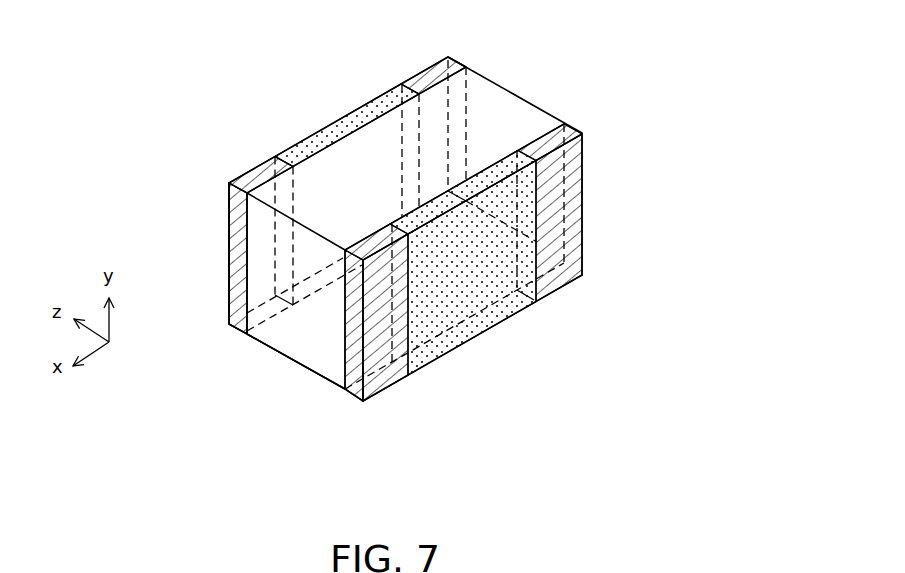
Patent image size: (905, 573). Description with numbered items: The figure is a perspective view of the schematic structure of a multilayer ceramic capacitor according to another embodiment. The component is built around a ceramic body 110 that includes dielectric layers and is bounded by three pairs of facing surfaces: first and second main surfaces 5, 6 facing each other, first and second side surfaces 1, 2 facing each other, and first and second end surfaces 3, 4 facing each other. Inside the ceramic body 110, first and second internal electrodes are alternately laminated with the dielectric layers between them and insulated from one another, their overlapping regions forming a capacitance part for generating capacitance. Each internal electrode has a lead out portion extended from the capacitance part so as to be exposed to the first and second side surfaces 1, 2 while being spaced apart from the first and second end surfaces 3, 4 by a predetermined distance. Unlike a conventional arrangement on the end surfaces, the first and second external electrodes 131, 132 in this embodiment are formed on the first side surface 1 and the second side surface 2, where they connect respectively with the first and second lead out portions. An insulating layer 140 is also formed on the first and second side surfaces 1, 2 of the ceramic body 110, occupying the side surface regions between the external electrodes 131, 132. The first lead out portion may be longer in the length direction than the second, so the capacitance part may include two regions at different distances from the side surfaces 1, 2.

The first side surface 1 is at (493, 297).
The second side surface 2 is at (335, 173).
The first end surface 3 is at (236, 283).
The second end surface 4 is at (486, 110).
The first main surface 5 is at (385, 135).
The second main surface 6 is at (325, 348).
The ceramic body 110 is at (287, 343).
The first external electrode 131 is at (258, 167).
The second external electrode 132 is at (430, 68).
The insulating layer 140 is at (345, 124).